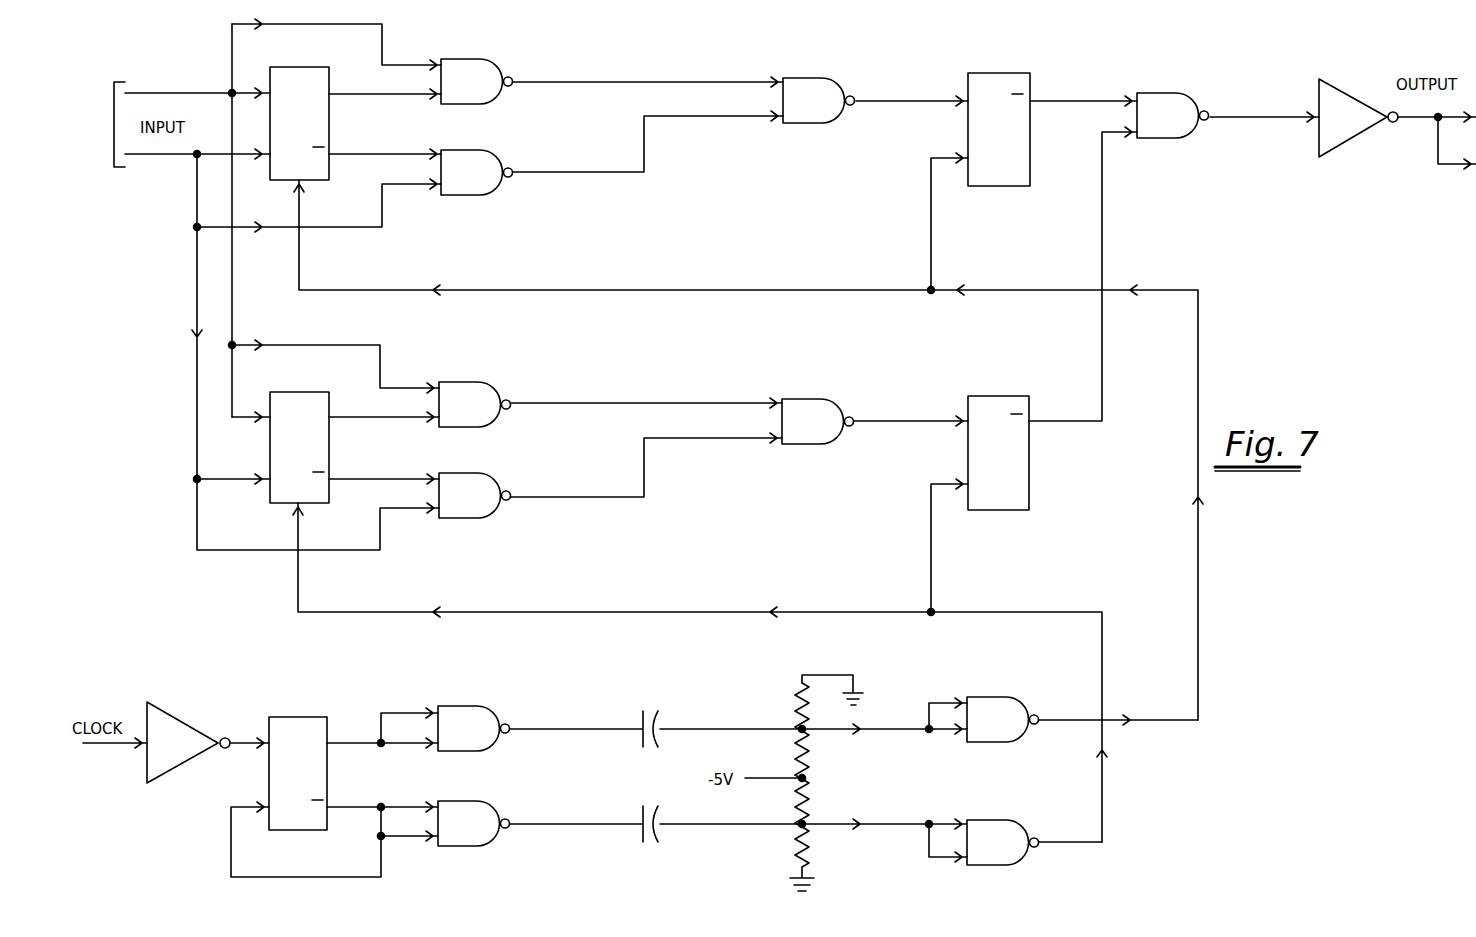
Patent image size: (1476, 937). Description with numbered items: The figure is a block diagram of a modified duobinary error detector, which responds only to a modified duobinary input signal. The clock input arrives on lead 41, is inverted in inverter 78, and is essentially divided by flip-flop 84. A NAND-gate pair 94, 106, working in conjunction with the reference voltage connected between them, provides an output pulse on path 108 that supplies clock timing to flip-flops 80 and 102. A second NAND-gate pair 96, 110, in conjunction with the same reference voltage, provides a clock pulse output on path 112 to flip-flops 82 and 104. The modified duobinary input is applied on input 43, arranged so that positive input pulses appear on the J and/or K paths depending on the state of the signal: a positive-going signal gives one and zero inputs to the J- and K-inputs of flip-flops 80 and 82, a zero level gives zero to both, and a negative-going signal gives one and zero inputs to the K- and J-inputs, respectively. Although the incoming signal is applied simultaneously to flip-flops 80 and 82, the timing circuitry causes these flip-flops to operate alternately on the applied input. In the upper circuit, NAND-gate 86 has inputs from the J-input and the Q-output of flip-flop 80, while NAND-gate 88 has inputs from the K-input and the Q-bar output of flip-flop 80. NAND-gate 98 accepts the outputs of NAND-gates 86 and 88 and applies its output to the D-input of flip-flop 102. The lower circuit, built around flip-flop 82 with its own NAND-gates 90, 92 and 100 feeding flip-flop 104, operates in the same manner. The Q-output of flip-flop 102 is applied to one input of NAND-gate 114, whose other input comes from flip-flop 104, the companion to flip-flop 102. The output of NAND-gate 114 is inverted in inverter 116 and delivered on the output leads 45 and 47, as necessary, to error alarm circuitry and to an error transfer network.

The clock input lead 41 is at (102, 745).
The modified duobinary input 43 is at (112, 124).
The output line 45 is at (1448, 104).
The output line 47 is at (1441, 172).
The inverter 78 is at (160, 776).
The flip-flop 80 is at (283, 67).
The flip-flop 82 is at (283, 392).
The flip-flop 84 is at (283, 717).
The NAND-gate 86 is at (476, 59).
The NAND-gate 88 is at (476, 150).
The NAND gate 90 is at (474, 382).
The NAND gate 92 is at (474, 473).
The NAND-gate 94 is at (473, 706).
The NAND-gate 96 is at (473, 801).
The NAND-gate 98 is at (818, 78).
The NAND gate 100 is at (817, 399).
The flip-flop 102 is at (988, 73).
The flip-flop 104 is at (988, 396).
The NAND-gate 106 is at (1014, 688).
The path 108 is at (462, 290).
The NAND-gate 110 is at (1014, 811).
The path 112 is at (462, 612).
The NAND-gate 114 is at (1168, 93).
The inverter 116 is at (1340, 146).